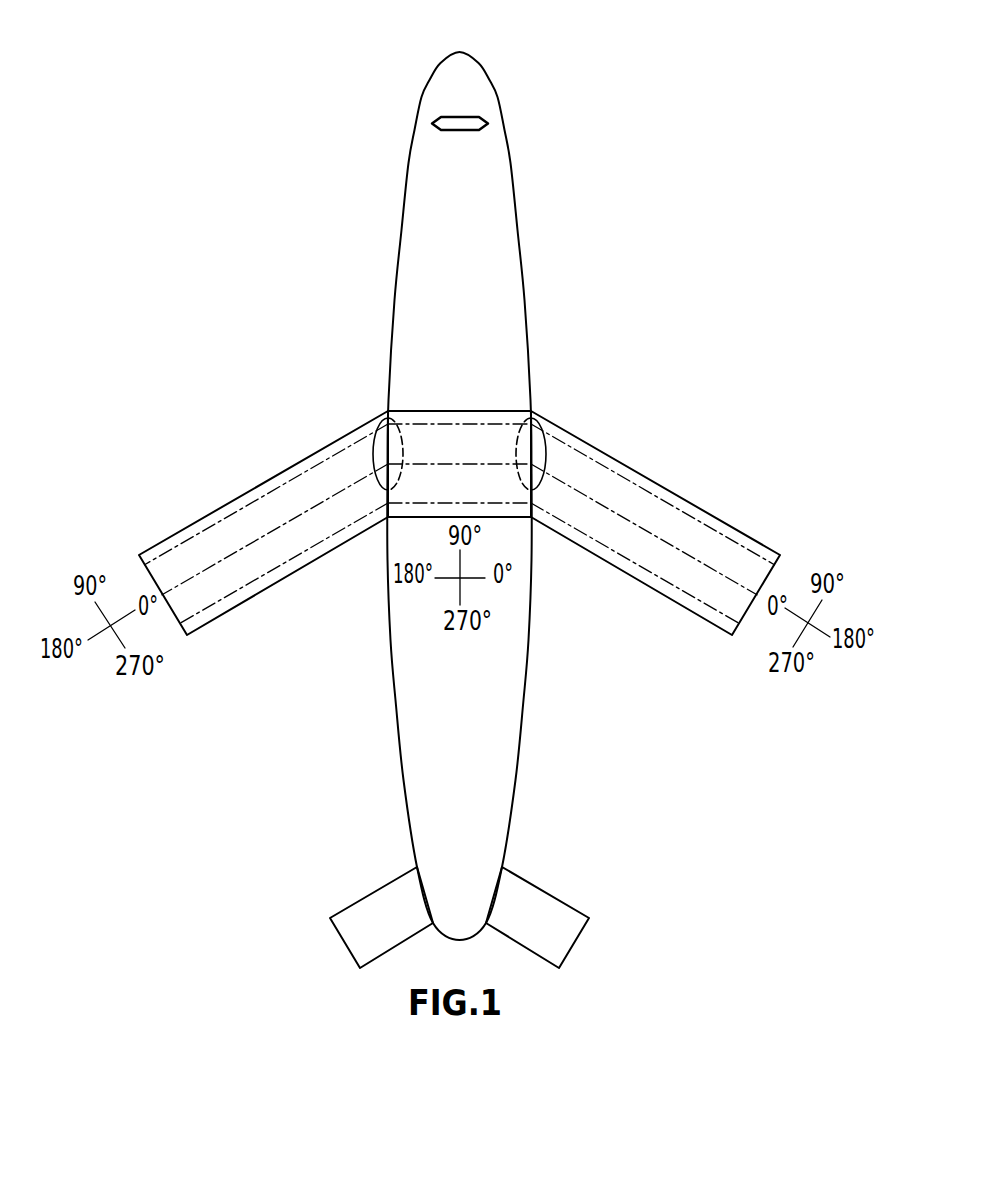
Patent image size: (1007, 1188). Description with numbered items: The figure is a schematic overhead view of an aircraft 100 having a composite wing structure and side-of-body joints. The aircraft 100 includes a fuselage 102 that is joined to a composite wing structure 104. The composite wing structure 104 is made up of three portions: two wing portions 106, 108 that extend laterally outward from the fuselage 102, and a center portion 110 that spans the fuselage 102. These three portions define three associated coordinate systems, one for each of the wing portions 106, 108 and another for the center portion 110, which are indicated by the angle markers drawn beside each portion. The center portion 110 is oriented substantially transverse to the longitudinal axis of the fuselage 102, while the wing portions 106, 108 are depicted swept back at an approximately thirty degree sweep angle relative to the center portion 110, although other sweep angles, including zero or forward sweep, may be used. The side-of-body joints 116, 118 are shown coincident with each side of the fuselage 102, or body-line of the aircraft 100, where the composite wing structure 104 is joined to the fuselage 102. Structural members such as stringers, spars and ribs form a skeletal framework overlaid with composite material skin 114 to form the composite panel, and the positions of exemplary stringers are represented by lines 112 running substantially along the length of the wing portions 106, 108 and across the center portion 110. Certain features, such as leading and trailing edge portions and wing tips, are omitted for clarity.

The aircraft 100 is at (237, 230).
The fuselage 102 is at (402, 236).
The composite wing structure 104 is at (302, 369).
The wing portion 106 is at (272, 479).
The wing portion 108 is at (632, 469).
The center portion 110 is at (432, 411).
The lines representing stringers 112 is at (655, 573).
The composite material skin 114 is at (684, 533).
The side-of-body joint 116 is at (536, 447).
The side-of-body joint 118 is at (383, 447).